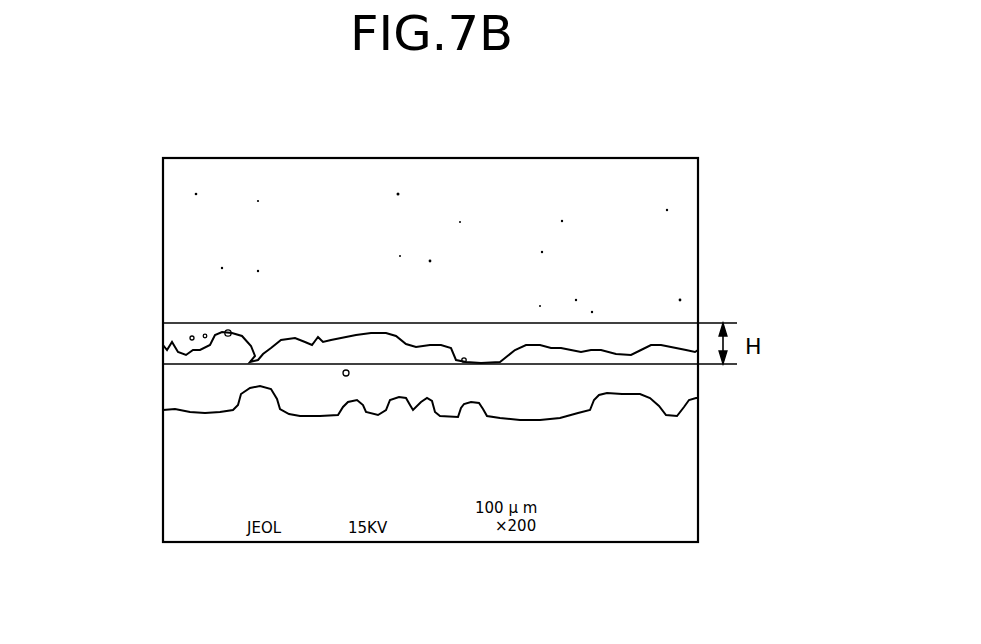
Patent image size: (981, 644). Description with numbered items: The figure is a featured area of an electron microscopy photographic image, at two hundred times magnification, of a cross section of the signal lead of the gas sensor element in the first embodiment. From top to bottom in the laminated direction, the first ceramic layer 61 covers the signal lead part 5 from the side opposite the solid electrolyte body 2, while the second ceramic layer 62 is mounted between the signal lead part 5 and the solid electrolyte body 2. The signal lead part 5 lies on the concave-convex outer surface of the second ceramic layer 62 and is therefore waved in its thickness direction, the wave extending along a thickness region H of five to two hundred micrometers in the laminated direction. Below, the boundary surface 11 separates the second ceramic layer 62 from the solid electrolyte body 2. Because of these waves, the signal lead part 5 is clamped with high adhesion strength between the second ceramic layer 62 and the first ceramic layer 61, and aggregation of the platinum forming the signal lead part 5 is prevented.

The first ceramic layer 61 is at (600, 200).
The signal lead part 5 is at (550, 345).
The second ceramic layer 62 is at (190, 390).
The boundary surface 11 is at (300, 420).
The solid electrolyte body 2 is at (653, 474).